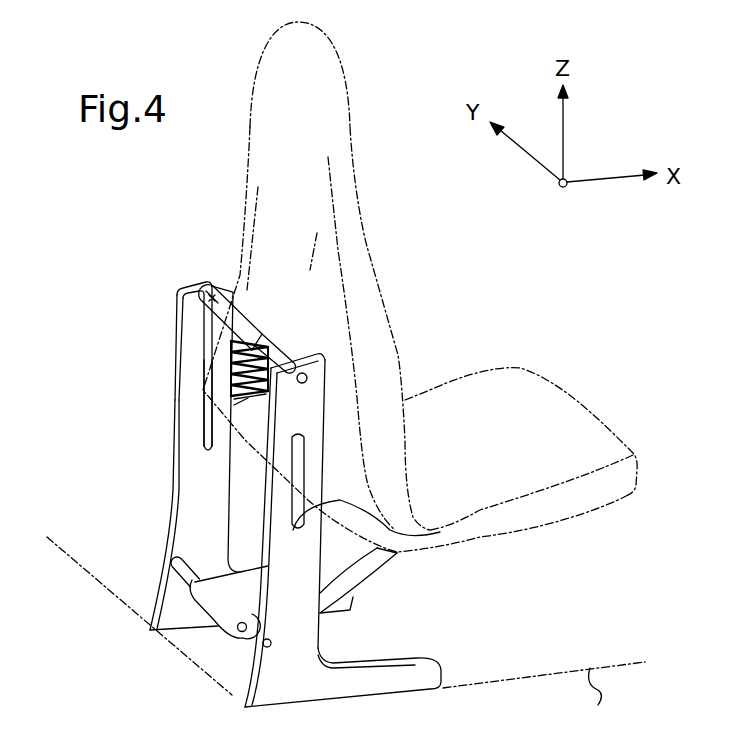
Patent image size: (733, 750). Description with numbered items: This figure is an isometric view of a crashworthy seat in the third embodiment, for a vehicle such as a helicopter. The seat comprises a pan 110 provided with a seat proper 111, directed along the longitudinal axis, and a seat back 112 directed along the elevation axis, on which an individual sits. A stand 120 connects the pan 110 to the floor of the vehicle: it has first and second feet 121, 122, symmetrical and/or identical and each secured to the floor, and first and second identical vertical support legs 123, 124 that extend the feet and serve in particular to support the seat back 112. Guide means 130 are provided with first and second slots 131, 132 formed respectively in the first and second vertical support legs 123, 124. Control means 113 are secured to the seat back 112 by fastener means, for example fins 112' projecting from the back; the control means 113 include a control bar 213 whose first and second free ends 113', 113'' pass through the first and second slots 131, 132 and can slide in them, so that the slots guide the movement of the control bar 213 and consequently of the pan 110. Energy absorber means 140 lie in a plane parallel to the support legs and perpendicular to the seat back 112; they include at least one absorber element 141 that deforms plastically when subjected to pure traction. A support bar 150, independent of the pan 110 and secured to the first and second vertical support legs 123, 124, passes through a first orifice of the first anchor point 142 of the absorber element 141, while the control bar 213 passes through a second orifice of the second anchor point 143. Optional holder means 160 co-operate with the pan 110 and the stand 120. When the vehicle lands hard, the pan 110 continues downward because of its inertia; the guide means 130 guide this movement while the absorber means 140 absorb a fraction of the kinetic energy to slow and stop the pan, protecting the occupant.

The pan 110 is at (405, 353).
The seat proper 111 is at (597, 440).
The seat back 112 is at (326, 328).
The fins 112' is at (309, 343).
The control means 113 is at (192, 435).
The first free end 113' is at (157, 369).
The second free end 113'' is at (362, 473).
The stand 120 is at (168, 650).
The first foot 121 is at (158, 592).
The second foot 122 is at (418, 665).
The first vertical support leg 123 is at (165, 478).
The second vertical support leg 124 is at (260, 684).
The guide means 130 is at (179, 379).
The first slot 131 is at (205, 385).
The second slot 132 is at (410, 525).
The energy absorber means 140 is at (267, 308).
The absorber element 141 is at (270, 316).
The first anchor point 142 is at (208, 288).
The second anchor point 143 is at (242, 409).
The support bar 150 is at (177, 288).
The holder means 160 is at (387, 574).
The control bar 213 is at (275, 403).